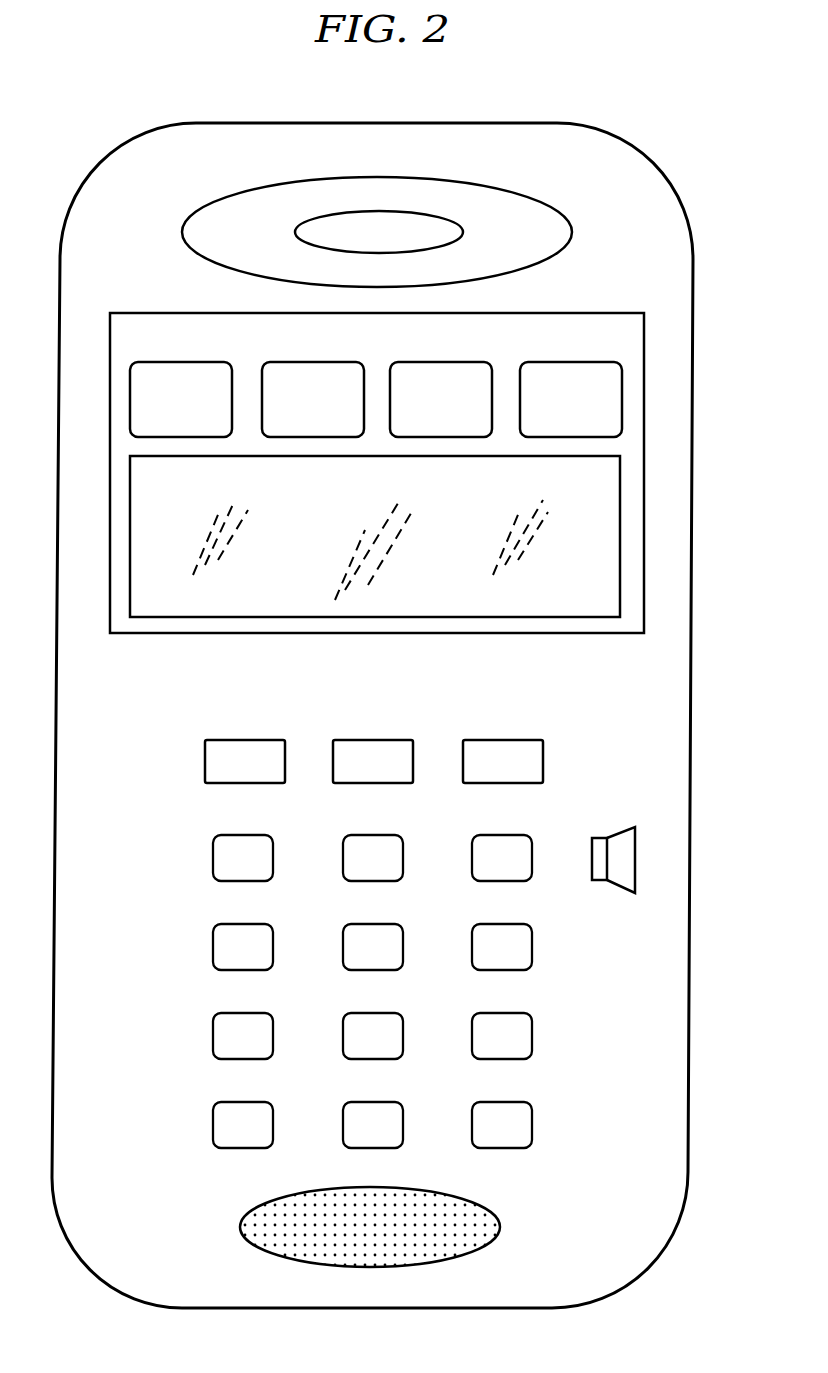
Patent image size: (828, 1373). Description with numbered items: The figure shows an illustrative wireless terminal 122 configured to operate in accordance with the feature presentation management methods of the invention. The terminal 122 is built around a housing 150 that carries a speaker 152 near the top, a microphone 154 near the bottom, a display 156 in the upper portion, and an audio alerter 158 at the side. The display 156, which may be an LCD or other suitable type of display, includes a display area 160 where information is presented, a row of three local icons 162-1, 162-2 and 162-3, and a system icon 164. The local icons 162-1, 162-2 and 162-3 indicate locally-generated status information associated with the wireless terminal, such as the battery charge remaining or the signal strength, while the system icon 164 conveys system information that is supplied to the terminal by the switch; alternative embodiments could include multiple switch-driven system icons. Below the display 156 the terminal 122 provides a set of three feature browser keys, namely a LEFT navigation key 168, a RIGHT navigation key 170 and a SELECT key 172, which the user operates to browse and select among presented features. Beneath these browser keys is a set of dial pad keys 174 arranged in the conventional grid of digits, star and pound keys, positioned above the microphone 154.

The wireless terminal 122 is at (650, 117).
The housing 150 is at (103, 162).
The speaker 152 is at (572, 236).
The microphone 154 is at (240, 1224).
The display 156 is at (128, 311).
The audio alerter 158 is at (606, 835).
The display area 160 is at (608, 472).
The local icon 162-1 is at (187, 361).
The local icon 162-2 is at (317, 361).
The local icon 162-3 is at (445, 361).
The system icon 164 is at (574, 361).
The LEFT navigation key 168 is at (253, 736).
The RIGHT navigation key 170 is at (509, 736).
The SELECT key 172 is at (379, 736).
The dial pad keys 174 is at (200, 837).